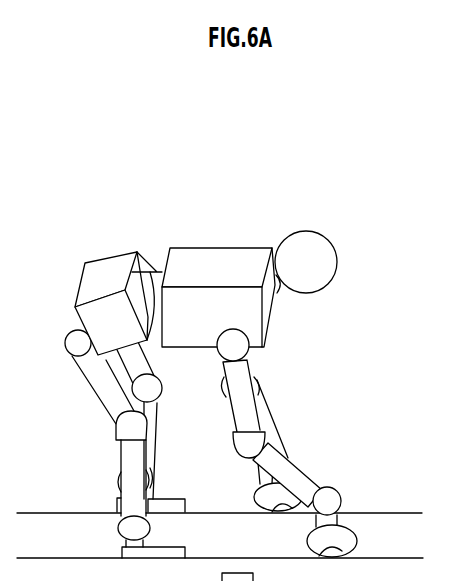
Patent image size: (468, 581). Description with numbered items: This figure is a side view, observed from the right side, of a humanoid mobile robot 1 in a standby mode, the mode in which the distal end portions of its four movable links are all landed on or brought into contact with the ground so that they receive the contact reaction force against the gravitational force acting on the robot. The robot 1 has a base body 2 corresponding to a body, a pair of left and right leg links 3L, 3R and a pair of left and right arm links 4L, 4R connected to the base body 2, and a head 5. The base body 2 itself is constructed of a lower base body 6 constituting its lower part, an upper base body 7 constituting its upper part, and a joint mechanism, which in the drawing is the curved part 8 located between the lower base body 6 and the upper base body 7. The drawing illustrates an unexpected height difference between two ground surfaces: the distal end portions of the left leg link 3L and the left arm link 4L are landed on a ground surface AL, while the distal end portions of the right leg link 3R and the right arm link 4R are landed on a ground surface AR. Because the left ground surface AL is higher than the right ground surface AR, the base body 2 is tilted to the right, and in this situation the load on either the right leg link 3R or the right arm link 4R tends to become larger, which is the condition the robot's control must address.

The mobile robot 1 is at (262, 182).
The base body 2 is at (175, 228).
The left leg link 3L is at (164, 374).
The right leg link 3R is at (113, 442).
The left arm link 4L is at (272, 413).
The right arm link 4R is at (232, 452).
The head 5 is at (330, 229).
The lower base body 6 is at (107, 273).
The upper base body 7 is at (210, 258).
The joint portion 8 is at (138, 250).
The ground surface AL is at (411, 513).
The ground surface AR is at (398, 557).